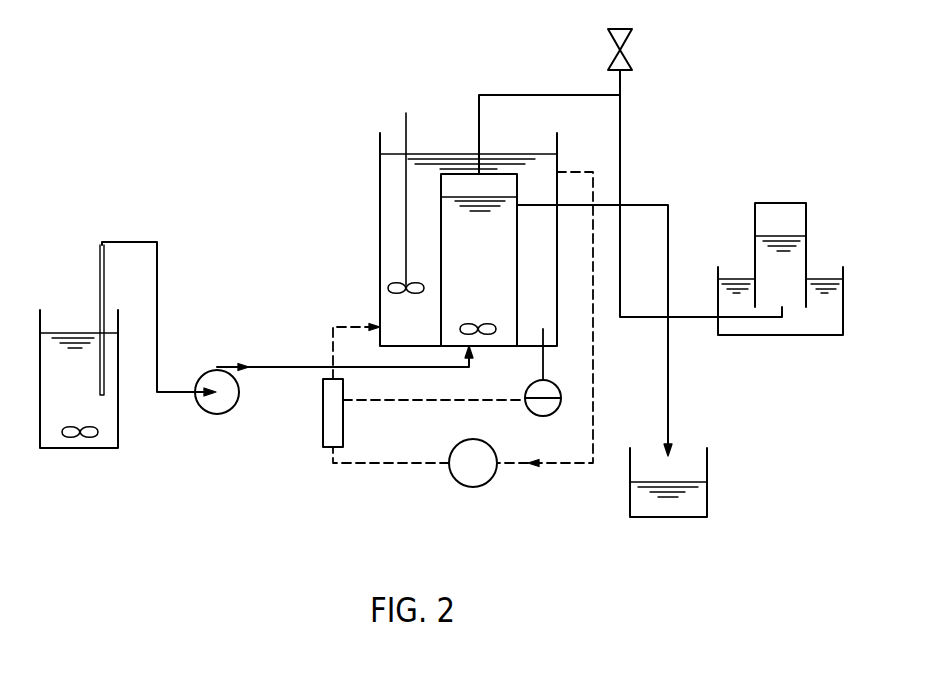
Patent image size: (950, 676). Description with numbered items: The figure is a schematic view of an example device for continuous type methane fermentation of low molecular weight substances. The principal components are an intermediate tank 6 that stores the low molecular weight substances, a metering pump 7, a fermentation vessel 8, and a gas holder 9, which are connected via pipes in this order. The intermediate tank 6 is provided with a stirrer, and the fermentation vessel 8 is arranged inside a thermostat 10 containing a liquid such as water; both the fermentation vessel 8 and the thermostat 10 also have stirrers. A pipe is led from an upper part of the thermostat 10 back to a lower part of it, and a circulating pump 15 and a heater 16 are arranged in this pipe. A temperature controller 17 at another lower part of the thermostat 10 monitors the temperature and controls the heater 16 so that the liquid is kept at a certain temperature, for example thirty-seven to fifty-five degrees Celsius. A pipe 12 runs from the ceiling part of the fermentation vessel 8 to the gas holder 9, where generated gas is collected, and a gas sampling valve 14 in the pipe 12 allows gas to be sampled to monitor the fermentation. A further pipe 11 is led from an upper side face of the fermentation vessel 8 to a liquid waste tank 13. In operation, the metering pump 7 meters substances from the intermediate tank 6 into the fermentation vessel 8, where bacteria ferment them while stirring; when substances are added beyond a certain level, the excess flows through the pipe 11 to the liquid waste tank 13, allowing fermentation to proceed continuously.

The intermediate tank 6 is at (80, 450).
The metering pump 7 is at (215, 414).
The fermentation vessel 8 is at (441, 312).
The gas holder 9 is at (806, 249).
The thermostat 10 is at (380, 220).
The pipe 11 is at (668, 232).
The pipe 12 is at (479, 117).
The liquid waste tank 13 is at (707, 461).
The gas sampling valve 14 is at (632, 53).
The circulating pump 15 is at (473, 487).
The heater 16 is at (323, 426).
The temperature controller 17 is at (559, 386).